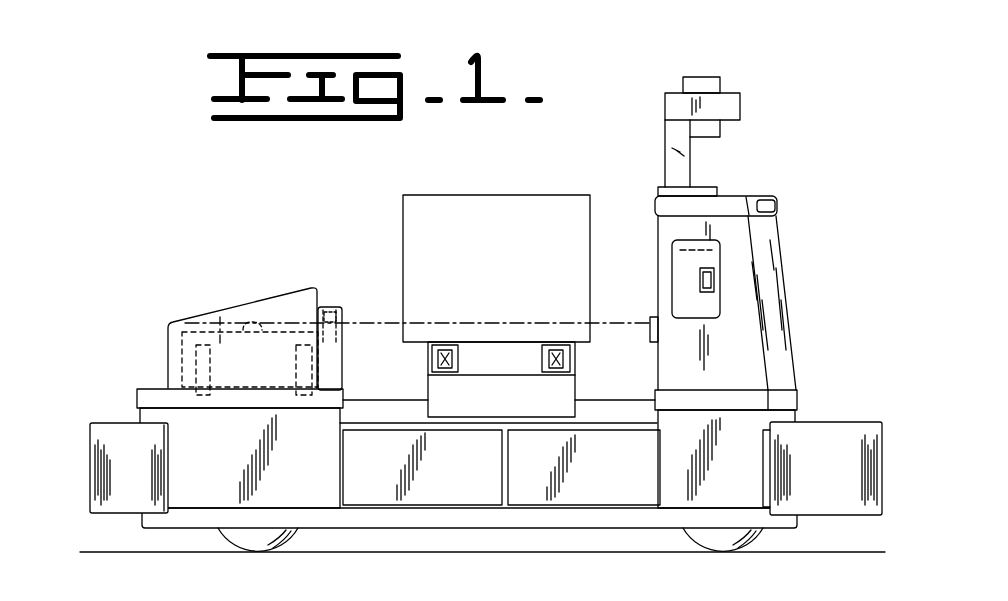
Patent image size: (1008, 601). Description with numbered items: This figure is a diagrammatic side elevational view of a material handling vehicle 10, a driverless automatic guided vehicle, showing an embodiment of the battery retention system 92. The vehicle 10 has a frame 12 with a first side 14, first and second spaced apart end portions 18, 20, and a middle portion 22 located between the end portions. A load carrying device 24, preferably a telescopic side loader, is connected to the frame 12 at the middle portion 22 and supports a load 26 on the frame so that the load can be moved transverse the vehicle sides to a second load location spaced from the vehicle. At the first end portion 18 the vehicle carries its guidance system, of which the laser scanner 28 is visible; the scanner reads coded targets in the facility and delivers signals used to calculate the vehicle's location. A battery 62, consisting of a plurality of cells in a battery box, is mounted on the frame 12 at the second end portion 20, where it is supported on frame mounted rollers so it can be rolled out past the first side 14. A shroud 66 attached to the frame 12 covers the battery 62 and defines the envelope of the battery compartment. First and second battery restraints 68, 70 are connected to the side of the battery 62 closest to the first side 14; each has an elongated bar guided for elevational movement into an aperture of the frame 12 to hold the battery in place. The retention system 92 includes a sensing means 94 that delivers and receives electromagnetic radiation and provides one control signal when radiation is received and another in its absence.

The material handling vehicle 10 is at (735, 58).
The frame 12 is at (797, 398).
The first side 14 is at (750, 487).
The first end portion 18 is at (778, 322).
The second end portion 20 is at (250, 317).
The middle portion 22 is at (497, 442).
The load carrying device 24 is at (458, 402).
The load 26 is at (508, 270).
The laser scanner 28 is at (722, 90).
The battery 62 is at (220, 310).
The shroud 66 is at (272, 297).
The first battery restraint 68 is at (197, 373).
The second battery restraint 70 is at (316, 372).
The system 92 is at (250, 305).
The sensing means 94 is at (350, 312).